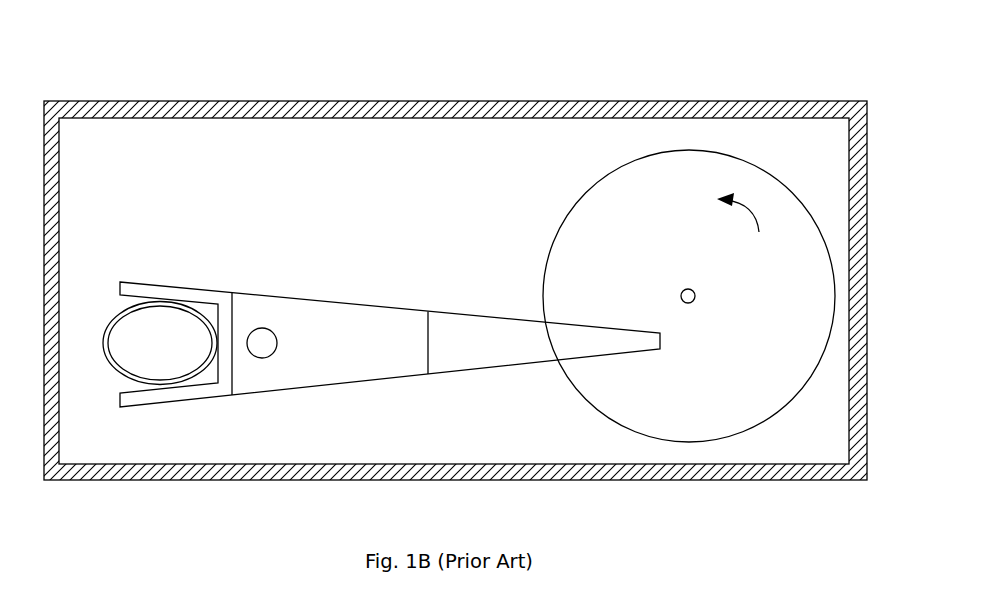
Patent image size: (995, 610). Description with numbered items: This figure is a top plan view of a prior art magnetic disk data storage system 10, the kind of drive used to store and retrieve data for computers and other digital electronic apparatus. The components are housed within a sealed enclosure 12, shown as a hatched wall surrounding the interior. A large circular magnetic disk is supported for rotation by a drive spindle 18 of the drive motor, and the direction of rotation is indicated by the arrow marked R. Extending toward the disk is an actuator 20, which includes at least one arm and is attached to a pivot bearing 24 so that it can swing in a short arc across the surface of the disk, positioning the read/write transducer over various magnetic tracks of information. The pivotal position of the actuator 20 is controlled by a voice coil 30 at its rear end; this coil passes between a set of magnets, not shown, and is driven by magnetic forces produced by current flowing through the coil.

The magnetic disk data storage system 10 is at (455, 255).
The sealed enclosure 12 is at (382, 101).
The drive spindle 18 is at (695, 291).
The actuator 20 is at (367, 336).
The pivot bearing 24 is at (277, 340).
The voice coil 30 is at (108, 326).